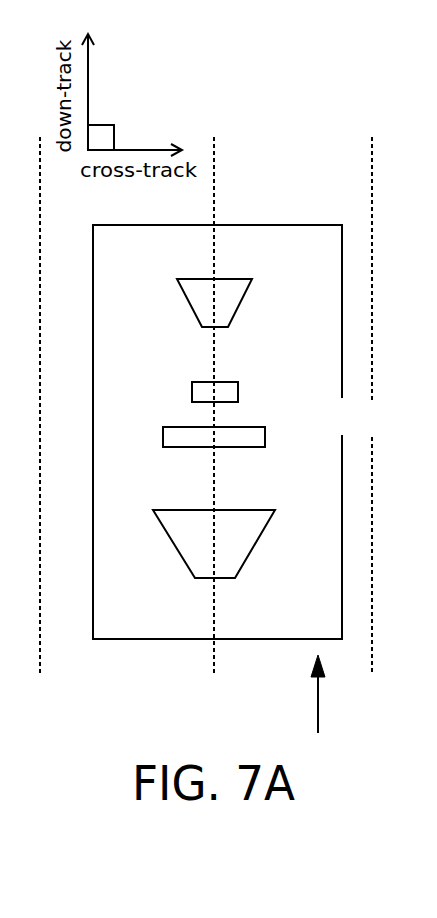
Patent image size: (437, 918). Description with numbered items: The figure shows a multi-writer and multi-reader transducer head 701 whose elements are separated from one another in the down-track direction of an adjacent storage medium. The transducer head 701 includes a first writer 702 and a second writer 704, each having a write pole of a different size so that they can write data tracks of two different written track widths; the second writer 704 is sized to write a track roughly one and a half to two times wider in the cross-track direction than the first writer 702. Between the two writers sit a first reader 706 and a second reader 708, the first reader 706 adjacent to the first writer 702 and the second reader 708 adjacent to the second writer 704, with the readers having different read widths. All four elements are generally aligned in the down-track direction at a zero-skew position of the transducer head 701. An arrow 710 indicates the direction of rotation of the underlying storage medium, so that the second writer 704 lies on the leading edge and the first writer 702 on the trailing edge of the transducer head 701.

The transducer head 701 is at (296, 141).
The first writer 702 is at (233, 280).
The second writer 704 is at (225, 510).
The first reader 706 is at (265, 439).
The second reader 708 is at (238, 392).
The arrow 710 is at (318, 712).